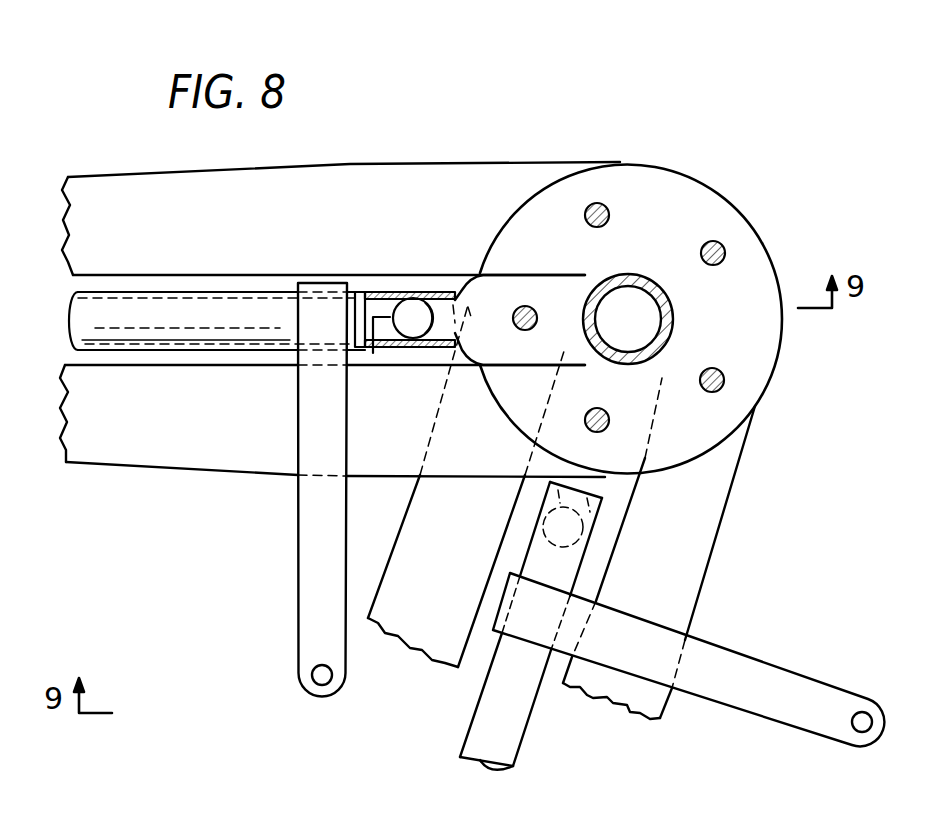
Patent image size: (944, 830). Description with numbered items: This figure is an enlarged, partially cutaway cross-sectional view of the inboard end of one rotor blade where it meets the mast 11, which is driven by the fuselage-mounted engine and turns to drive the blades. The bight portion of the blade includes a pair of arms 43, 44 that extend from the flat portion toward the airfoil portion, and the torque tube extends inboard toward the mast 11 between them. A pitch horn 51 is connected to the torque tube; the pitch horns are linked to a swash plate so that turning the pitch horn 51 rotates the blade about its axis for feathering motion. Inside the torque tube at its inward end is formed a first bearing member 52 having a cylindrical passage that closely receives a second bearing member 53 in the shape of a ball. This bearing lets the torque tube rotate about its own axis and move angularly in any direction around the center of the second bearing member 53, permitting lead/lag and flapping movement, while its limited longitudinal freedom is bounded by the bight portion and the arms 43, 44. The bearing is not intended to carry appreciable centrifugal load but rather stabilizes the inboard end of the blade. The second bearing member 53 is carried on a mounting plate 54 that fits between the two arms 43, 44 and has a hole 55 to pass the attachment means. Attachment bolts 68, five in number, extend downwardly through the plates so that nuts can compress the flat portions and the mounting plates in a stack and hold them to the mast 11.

The mast 11 is at (675, 317).
The arm 43 is at (462, 162).
The arm 44 is at (217, 470).
The pitch horn 51 is at (298, 585).
The first bearing member 52 is at (377, 293).
The second bearing member 53 is at (412, 300).
The mounting plate 54 is at (540, 275).
The hole 55 is at (525, 331).
The attachment bolts 68 is at (725, 248).